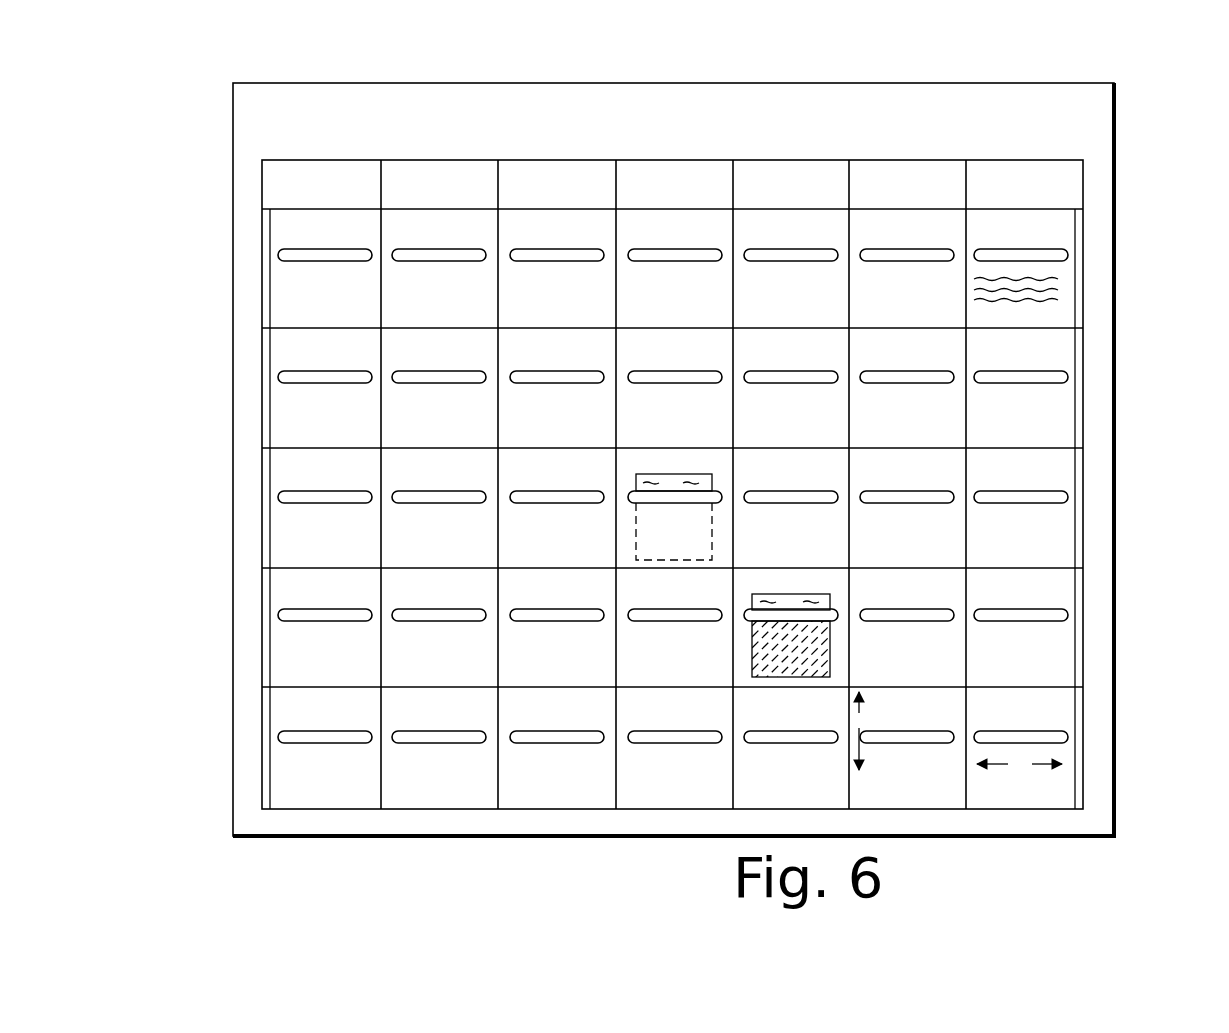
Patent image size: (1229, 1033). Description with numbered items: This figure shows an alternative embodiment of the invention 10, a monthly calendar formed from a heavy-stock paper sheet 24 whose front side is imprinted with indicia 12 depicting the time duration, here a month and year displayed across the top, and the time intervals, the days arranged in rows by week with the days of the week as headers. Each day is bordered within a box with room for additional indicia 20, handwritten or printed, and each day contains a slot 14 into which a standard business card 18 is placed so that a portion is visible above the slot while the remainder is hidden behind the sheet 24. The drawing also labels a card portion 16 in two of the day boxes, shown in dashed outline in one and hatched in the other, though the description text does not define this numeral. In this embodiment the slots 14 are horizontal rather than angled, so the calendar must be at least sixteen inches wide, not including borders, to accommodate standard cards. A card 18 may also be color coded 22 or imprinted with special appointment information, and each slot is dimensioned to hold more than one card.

The invention 10 is at (207, 77).
The indicia 12 is at (690, 106).
The slot 14 is at (1028, 250).
The card 16 is at (723, 580).
The business card 18 is at (670, 473).
The additional indicia 20 is at (1062, 293).
The color coding 22 is at (762, 657).
The sheet 24 is at (1080, 118).